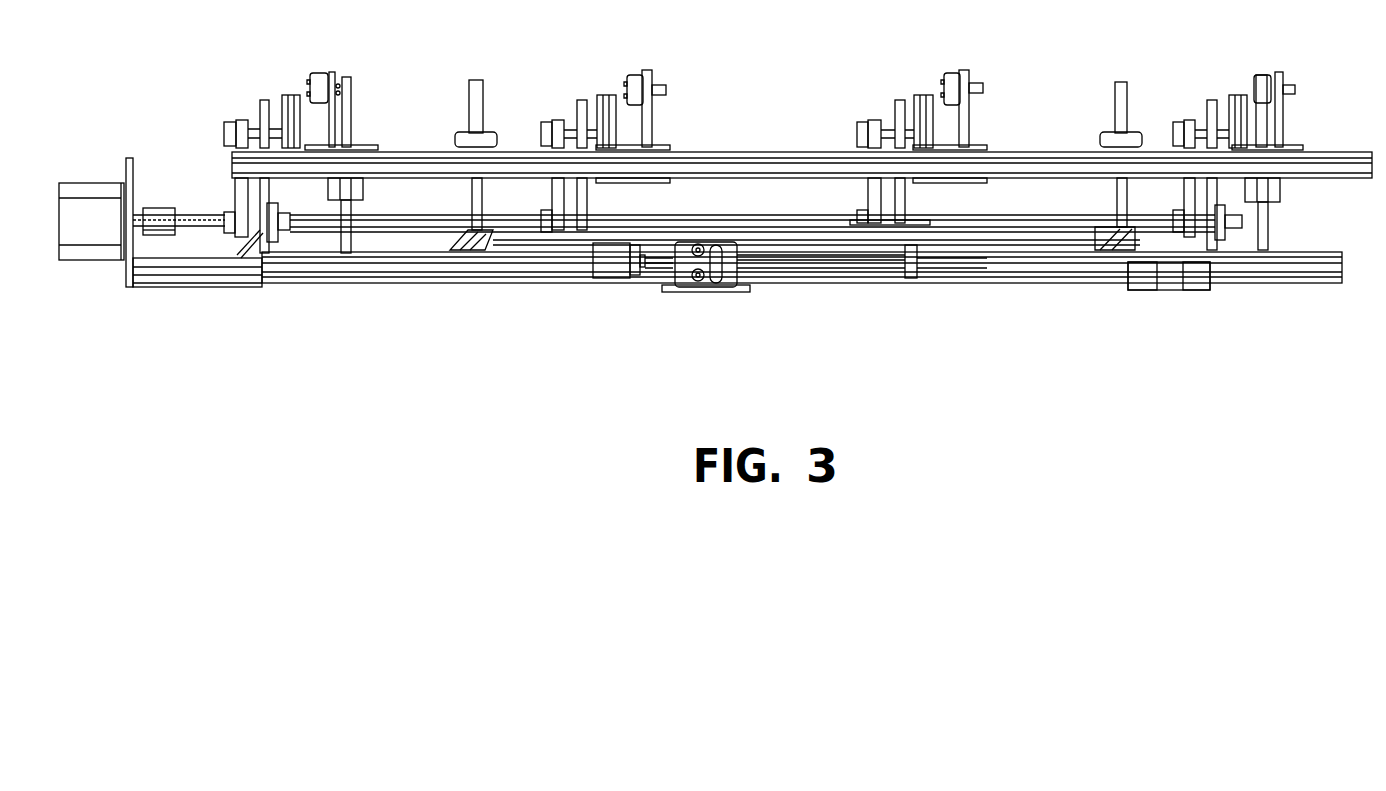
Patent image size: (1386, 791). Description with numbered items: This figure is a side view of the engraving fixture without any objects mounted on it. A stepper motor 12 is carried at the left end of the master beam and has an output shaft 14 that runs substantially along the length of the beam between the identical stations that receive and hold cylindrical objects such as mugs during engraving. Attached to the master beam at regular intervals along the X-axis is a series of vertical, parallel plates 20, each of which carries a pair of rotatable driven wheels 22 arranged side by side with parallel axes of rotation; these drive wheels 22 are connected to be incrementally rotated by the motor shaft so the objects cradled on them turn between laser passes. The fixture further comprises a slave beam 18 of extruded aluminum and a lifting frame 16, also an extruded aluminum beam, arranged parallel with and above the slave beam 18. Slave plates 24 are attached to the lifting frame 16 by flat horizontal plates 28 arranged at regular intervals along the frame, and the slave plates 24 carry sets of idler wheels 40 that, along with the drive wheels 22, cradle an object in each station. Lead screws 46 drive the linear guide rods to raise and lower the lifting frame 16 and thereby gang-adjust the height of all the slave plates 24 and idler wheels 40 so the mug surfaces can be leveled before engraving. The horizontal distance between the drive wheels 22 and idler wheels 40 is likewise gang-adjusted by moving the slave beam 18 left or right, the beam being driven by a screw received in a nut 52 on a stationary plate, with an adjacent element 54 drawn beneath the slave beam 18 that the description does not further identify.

The stepper motor 12 is at (105, 183).
The output shaft 14 is at (195, 212).
The lifting frame 16 is at (1352, 152).
The slave beam 18 is at (1283, 280).
The plates 20 is at (258, 105).
The driven wheels 22 is at (290, 95).
The slave plates 24 is at (335, 118).
The flat horizontal plates 28 is at (233, 198).
The idler wheels 40 is at (317, 73).
The lead screws 46 is at (478, 80).
The nut 52 is at (713, 292).
The actuator rod 54 is at (825, 260).